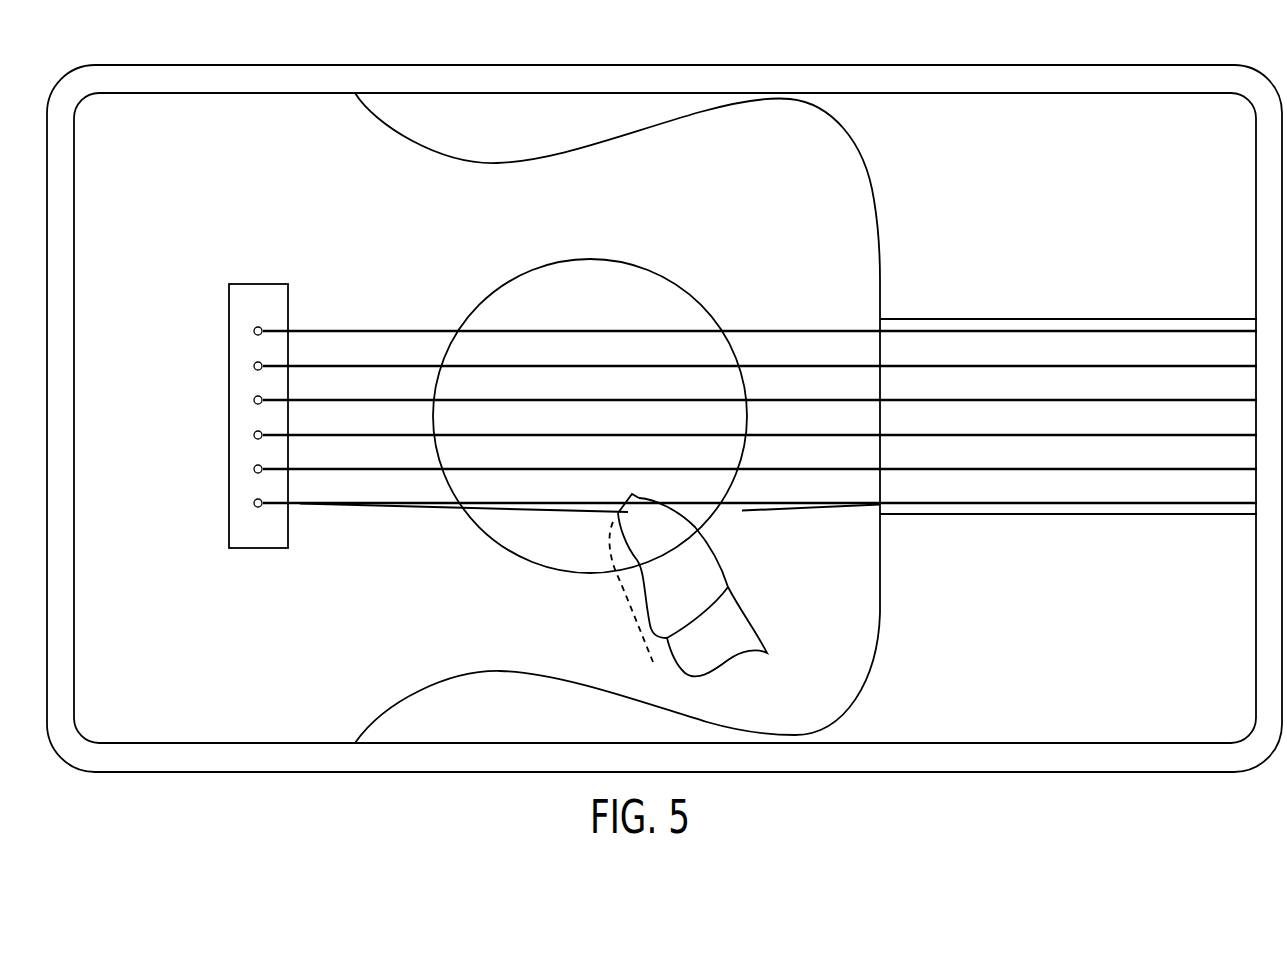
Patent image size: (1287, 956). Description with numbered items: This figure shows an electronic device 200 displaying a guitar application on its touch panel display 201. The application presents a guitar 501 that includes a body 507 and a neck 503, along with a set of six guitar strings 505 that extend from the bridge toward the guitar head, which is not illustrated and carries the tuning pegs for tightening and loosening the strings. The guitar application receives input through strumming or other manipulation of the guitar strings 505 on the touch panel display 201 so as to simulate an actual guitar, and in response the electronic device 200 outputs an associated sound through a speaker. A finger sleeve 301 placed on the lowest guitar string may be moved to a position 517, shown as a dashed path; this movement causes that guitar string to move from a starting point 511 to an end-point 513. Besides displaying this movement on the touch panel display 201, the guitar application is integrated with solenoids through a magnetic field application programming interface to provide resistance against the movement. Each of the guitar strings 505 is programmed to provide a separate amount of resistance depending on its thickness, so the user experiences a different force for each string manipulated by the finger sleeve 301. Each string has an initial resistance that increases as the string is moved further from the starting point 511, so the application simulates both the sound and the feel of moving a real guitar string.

The electronic device 200 is at (1110, 772).
The touch panel display 201 is at (978, 722).
The body 507 is at (168, 722).
The guitar 501 is at (403, 701).
The neck 503 is at (1200, 516).
The guitar strings 505 is at (229, 497).
The starting point 511 is at (583, 504).
The end-point 513 is at (583, 511).
The finger sleeve 301 is at (723, 573).
The position 517 is at (645, 640).